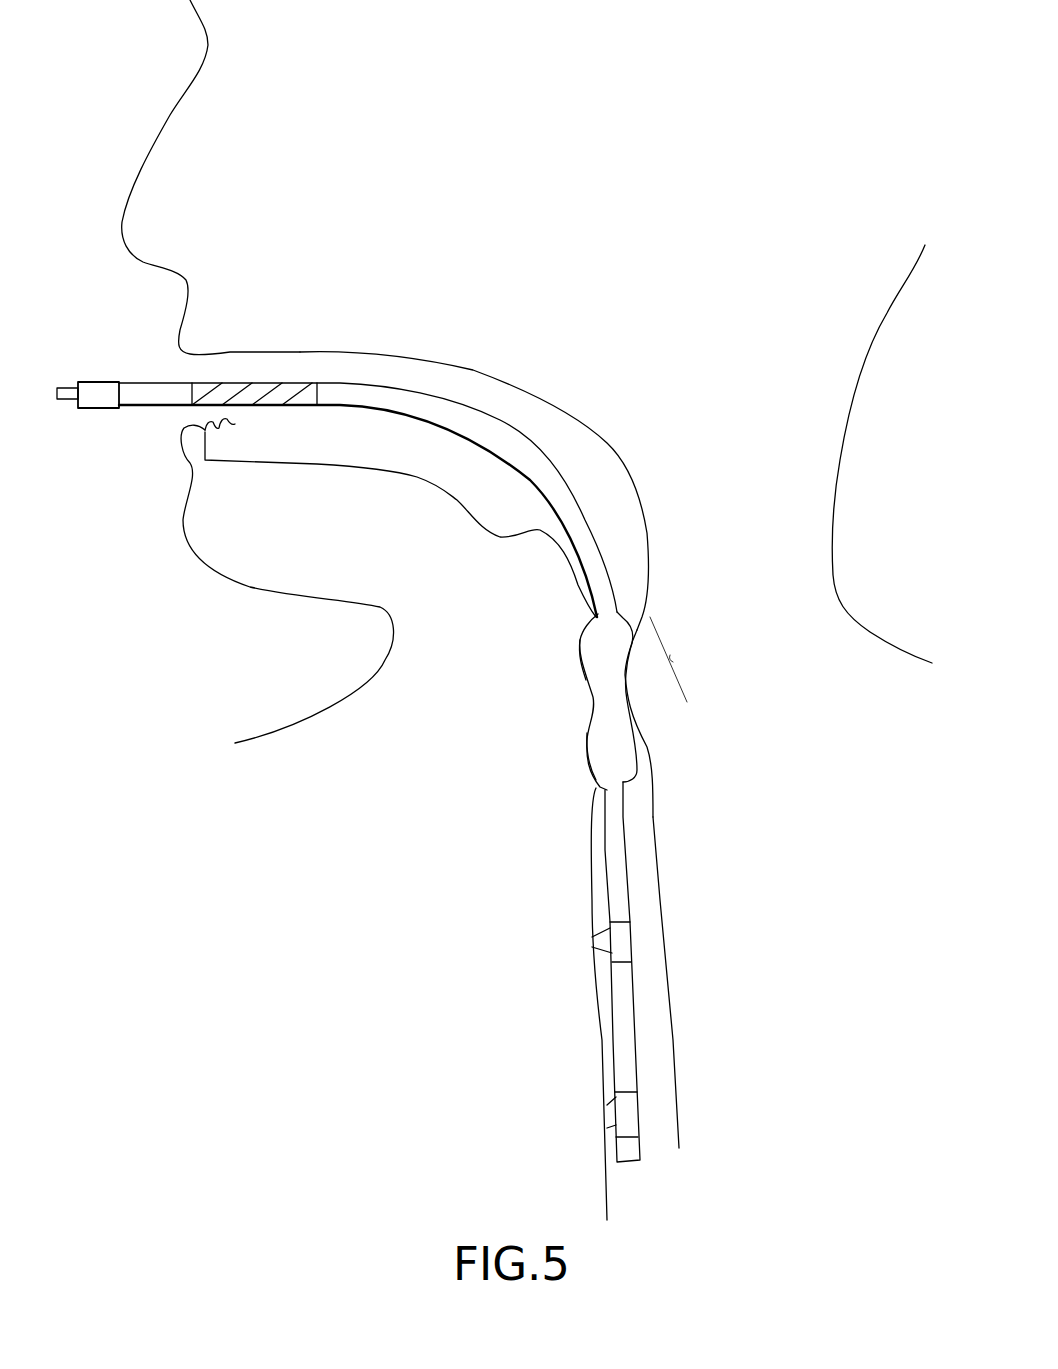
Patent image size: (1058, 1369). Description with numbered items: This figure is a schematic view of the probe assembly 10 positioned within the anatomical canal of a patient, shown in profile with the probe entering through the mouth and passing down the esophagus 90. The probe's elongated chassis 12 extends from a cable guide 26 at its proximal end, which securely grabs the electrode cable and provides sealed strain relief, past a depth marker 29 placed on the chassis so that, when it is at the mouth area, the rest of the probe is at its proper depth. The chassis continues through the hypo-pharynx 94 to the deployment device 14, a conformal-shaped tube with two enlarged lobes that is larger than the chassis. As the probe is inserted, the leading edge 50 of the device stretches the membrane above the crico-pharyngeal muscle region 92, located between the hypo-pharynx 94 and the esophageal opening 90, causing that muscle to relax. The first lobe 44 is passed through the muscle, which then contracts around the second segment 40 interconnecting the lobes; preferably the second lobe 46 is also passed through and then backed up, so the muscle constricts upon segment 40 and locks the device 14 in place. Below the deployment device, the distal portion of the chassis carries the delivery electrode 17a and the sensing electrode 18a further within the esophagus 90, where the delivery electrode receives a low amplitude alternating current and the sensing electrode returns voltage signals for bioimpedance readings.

The probe assembly 10 is at (405, 397).
The chassis 12 is at (543, 460).
The deployment device 14 is at (597, 760).
The delivery electrode 17a is at (602, 943).
The sensing electrode 18a is at (613, 1117).
The cable guide 26 is at (98, 388).
The depth marker 29 is at (257, 388).
The second segment 40 is at (593, 697).
The first lobe 44 is at (587, 742).
The second lobe 46 is at (578, 648).
The leading edge 50 is at (637, 770).
The esophagus 90 is at (658, 868).
The crico-pharyngeal muscle region 92 is at (677, 659).
The hypo-pharynx 94 is at (628, 538).